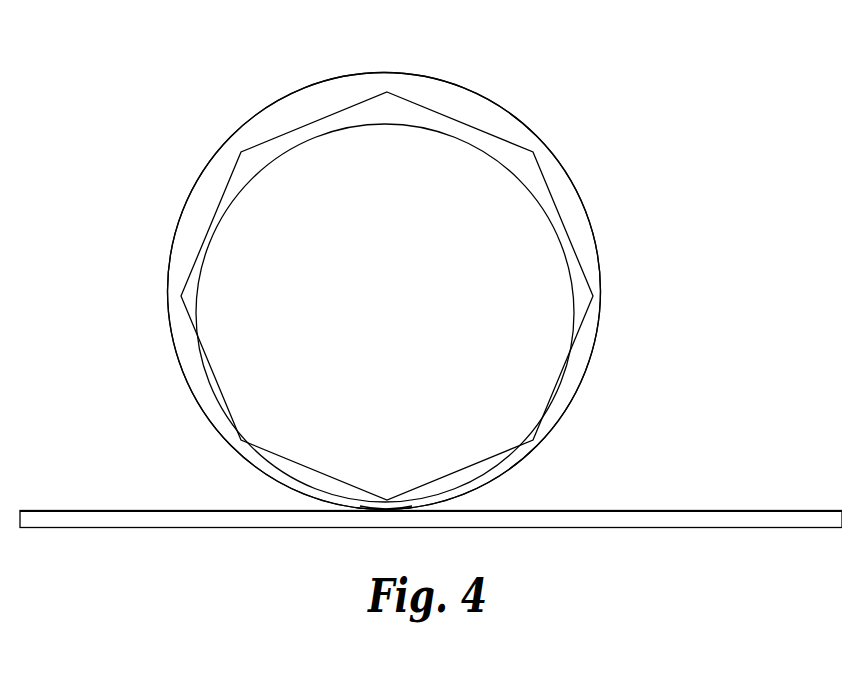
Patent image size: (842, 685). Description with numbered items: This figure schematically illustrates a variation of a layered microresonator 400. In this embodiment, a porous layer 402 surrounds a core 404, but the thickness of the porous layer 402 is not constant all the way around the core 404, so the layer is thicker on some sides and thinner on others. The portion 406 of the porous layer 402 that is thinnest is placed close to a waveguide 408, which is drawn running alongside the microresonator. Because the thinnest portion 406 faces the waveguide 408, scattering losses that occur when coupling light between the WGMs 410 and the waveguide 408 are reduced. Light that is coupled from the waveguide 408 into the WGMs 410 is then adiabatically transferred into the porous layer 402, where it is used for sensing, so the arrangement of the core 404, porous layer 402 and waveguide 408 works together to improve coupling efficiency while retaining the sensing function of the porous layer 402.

The layered microresonator 400 is at (635, 117).
The porous layer 402 is at (180, 221).
The core 404 is at (453, 148).
The portion of the porous layer that is thinnest 406 is at (395, 506).
The waveguide 408 is at (677, 516).
The WGMs 410 is at (573, 250).